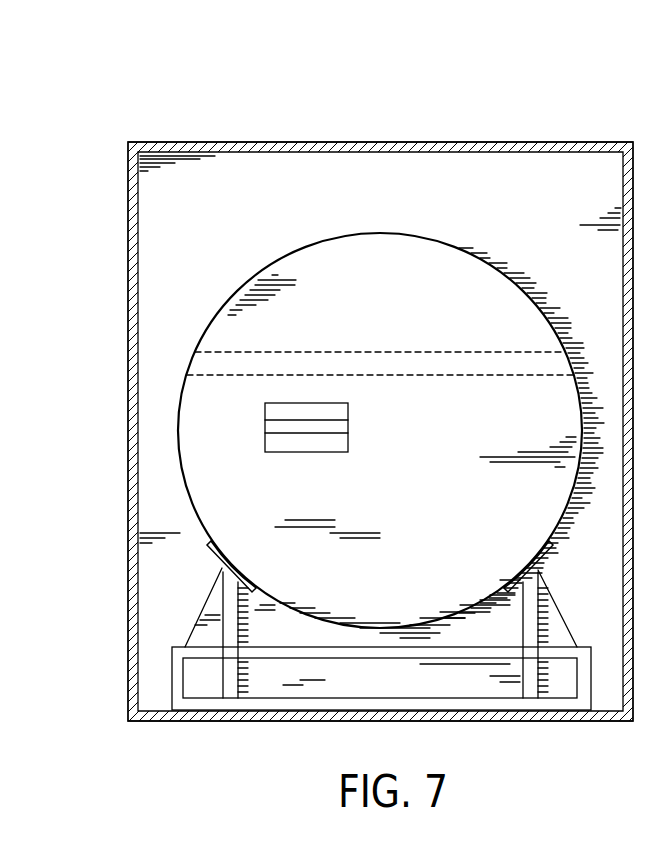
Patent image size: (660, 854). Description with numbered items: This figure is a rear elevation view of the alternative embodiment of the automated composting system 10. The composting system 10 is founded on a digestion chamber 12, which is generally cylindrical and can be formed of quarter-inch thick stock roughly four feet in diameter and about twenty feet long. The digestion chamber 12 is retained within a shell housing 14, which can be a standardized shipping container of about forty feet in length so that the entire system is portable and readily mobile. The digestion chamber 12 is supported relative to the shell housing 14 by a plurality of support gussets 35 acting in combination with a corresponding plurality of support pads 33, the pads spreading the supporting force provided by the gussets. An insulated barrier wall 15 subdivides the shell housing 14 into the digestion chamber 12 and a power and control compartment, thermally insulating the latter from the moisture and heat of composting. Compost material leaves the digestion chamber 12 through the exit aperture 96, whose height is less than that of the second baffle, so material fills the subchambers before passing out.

The composting system 10 is at (232, 83).
The shell housing 14 is at (495, 128).
The insulated barrier wall 15 is at (157, 247).
The digestion chamber 12 is at (333, 235).
The exit aperture 96 is at (265, 410).
The support gussets 35 is at (220, 565).
The support pads 33 is at (205, 605).